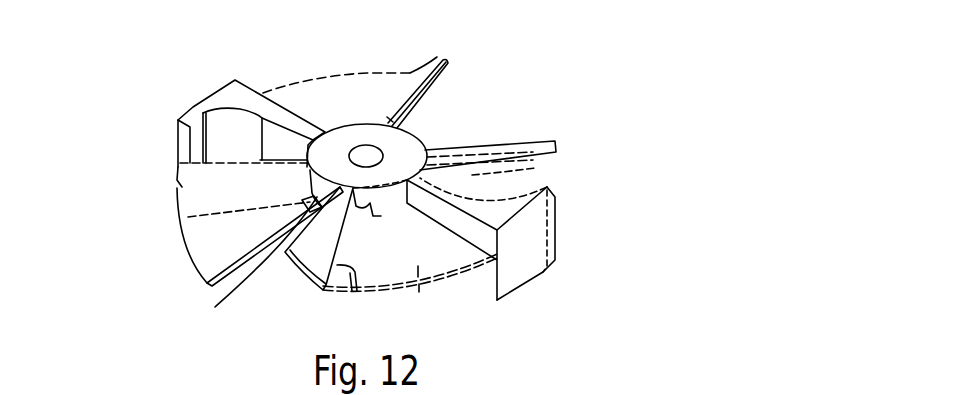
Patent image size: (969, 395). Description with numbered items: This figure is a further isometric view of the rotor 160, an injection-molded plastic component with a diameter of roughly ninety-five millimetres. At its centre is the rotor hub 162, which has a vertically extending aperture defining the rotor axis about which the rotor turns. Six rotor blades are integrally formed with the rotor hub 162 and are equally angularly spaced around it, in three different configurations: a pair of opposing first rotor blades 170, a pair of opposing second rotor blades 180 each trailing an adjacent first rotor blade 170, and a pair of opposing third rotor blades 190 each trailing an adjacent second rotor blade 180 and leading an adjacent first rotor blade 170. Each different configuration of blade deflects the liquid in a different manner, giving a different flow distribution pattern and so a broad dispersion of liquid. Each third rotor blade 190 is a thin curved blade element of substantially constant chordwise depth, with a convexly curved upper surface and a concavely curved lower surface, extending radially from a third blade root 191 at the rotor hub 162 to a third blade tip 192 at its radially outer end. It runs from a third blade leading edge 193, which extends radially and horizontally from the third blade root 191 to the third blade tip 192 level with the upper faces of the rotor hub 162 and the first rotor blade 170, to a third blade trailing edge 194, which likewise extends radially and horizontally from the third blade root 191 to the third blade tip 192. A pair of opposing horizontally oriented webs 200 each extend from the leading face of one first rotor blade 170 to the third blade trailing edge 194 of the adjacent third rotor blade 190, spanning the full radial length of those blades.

The rotor 160 is at (92, 44).
The rotor hub 162 is at (351, 140).
The first rotor blade 170 is at (205, 80).
The second rotor blade 180 is at (176, 238).
The third rotor blade 190 is at (457, 78).
The third blade root 191 is at (386, 220).
The third blade tip 192 is at (307, 275).
The third blade leading edge 193 is at (241, 270).
The third blade trailing edge 194 is at (356, 291).
The web 200 is at (410, 292).